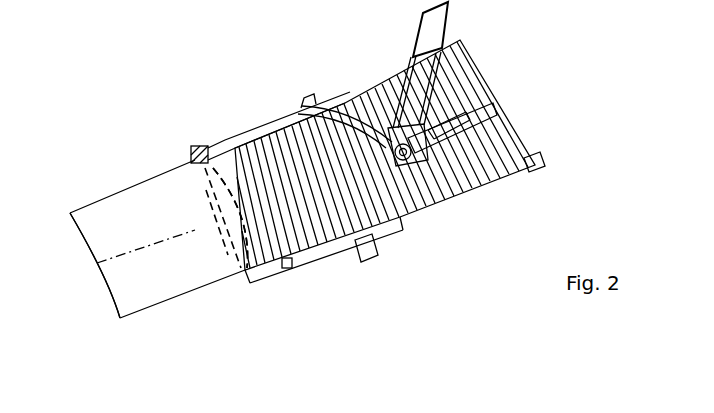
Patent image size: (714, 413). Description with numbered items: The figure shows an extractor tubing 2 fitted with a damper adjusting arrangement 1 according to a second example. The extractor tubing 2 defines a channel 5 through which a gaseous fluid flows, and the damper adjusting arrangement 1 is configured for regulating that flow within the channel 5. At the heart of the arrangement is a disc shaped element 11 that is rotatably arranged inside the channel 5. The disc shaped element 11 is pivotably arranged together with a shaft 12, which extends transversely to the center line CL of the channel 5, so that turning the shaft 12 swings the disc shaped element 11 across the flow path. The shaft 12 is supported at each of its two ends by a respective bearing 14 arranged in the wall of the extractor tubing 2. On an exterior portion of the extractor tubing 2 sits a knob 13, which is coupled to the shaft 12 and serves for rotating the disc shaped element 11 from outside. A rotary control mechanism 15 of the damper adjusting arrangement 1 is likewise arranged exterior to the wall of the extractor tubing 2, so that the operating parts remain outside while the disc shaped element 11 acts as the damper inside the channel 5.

The damper adjusting arrangement 1 is at (190, 122).
The extractor tubing 2 is at (173, 297).
The channel 5 is at (82, 271).
The disc shaped element 11 is at (222, 246).
The shaft 12 is at (211, 210).
The knob 13 is at (203, 152).
The bearing 14 is at (222, 158).
The rotary control mechanism 15 is at (203, 168).
The center line CL is at (132, 250).